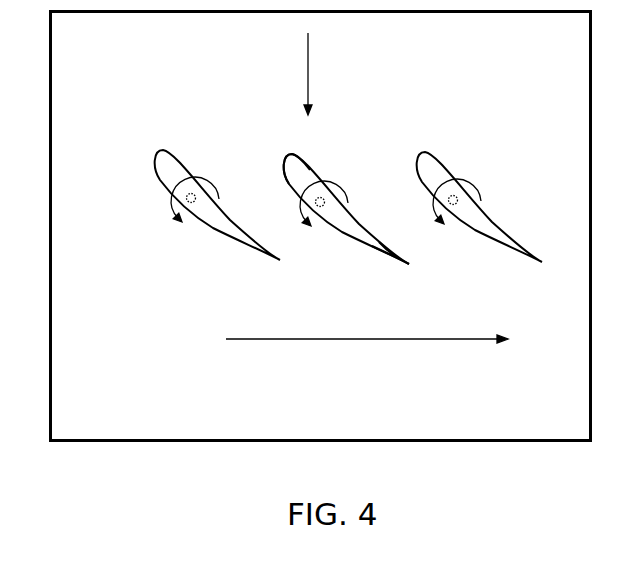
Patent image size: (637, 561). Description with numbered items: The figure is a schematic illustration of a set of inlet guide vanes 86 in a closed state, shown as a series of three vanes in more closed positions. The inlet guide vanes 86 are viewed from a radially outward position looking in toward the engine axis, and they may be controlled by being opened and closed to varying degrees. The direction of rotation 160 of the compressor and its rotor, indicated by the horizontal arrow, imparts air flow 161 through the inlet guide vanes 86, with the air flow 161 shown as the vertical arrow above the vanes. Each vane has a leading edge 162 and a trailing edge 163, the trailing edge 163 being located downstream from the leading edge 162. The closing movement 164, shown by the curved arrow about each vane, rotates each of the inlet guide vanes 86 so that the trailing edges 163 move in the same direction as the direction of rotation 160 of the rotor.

The inlet guide vanes 86 is at (172, 189).
The direction of rotation 160 is at (340, 339).
The air flow 161 is at (308, 72).
The leading edge 162 is at (292, 152).
The trailing edge 163 is at (409, 264).
The closing movement 164 is at (172, 212).